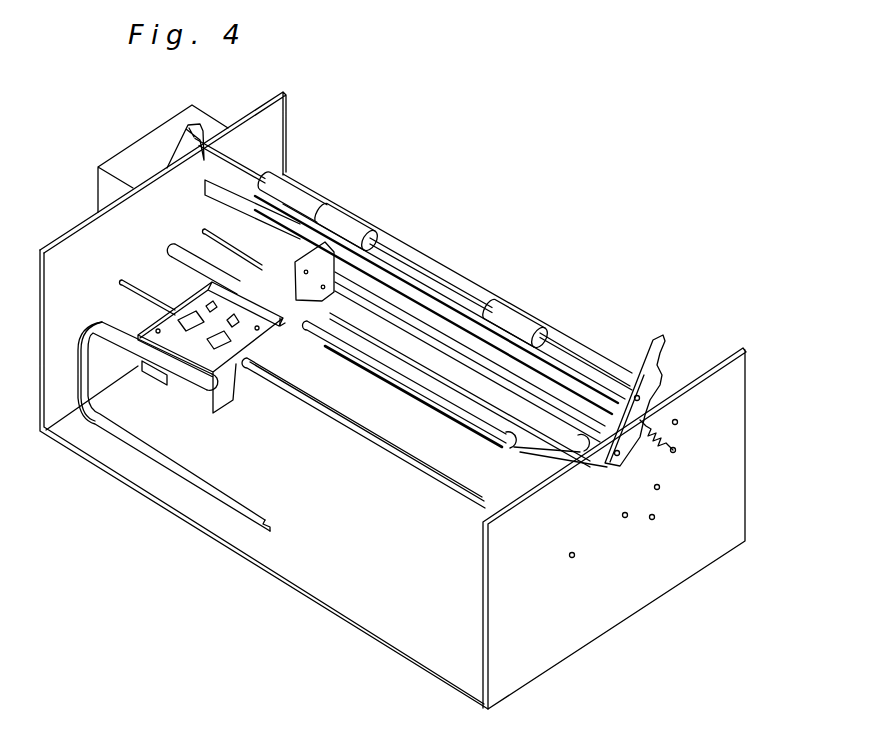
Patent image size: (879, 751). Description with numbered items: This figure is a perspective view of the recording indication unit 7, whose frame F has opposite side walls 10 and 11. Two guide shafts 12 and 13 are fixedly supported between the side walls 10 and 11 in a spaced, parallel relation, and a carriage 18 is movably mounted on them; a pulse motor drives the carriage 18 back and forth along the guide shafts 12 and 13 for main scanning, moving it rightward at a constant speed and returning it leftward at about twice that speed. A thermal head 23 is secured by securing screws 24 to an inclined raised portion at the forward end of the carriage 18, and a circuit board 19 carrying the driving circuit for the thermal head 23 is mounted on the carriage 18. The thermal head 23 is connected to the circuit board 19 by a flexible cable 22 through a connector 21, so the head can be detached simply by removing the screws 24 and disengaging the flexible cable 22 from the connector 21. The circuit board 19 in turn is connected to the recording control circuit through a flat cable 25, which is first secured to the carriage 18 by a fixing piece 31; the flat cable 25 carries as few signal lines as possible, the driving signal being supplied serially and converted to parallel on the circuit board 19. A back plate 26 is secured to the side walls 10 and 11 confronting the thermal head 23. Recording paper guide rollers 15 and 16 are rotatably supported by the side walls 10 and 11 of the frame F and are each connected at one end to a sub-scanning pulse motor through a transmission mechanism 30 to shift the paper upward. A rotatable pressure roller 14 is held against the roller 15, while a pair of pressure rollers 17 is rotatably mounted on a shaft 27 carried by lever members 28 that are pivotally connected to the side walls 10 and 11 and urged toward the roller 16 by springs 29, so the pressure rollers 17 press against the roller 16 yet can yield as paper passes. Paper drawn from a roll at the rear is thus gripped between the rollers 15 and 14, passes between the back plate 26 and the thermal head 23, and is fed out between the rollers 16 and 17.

The frame F is at (348, 627).
The side wall 10 is at (727, 398).
The side wall 11 is at (273, 130).
The guide shaft 12 is at (445, 480).
The guide shaft 13 is at (528, 455).
The pressure roller 14 is at (420, 403).
The recording paper guide roller 15 is at (568, 432).
The recording paper guide roller 16 is at (593, 360).
The pressure rollers 17 is at (343, 218).
The carriage 18 is at (410, 318).
The circuit board 19 is at (207, 353).
The connector 21 is at (288, 330).
The flexible cable 22 is at (175, 243).
The thermal head 23 is at (243, 237).
The securing screws 24 is at (318, 283).
The flat cable 25 is at (205, 482).
The back plate 26 is at (387, 297).
The shaft 27 is at (468, 297).
The lever members 28 is at (200, 126).
The springs 29 is at (666, 430).
The transmission mechanism 30 is at (128, 160).
The fixing piece 31 is at (177, 368).
The recording indication unit 7 is at (615, 240).